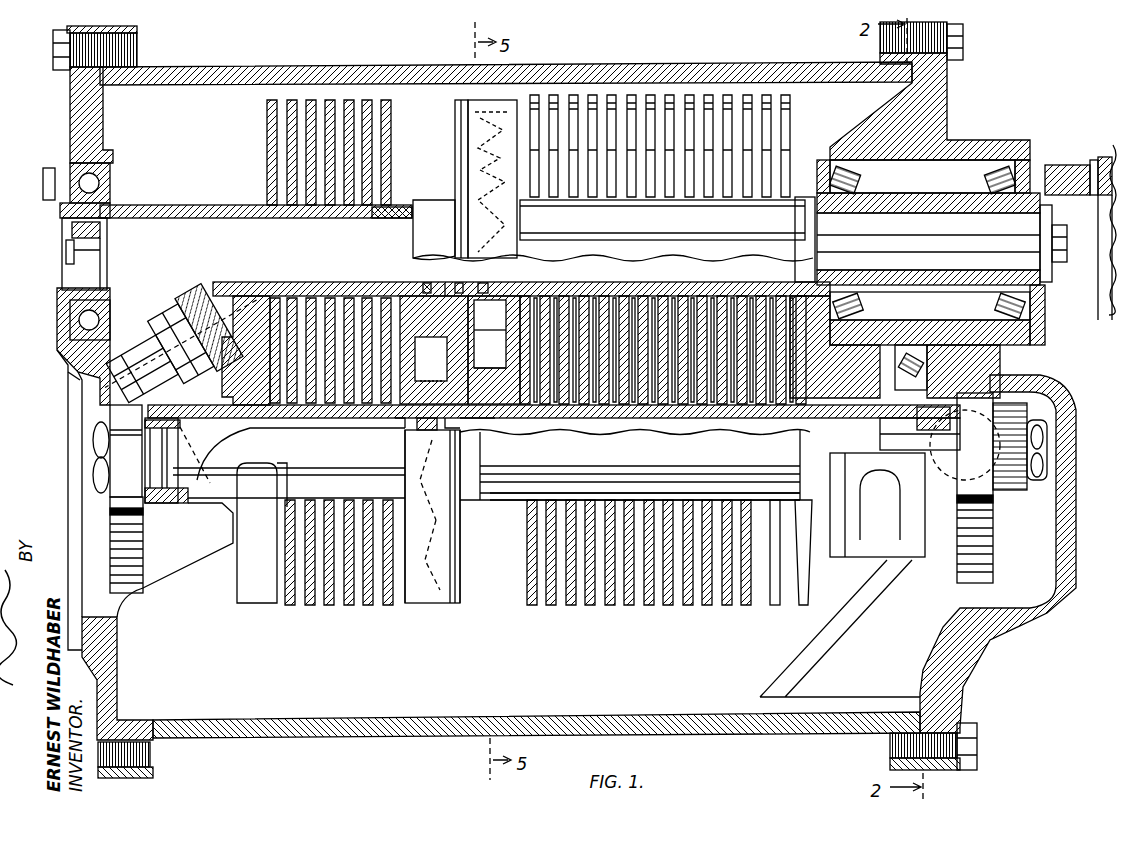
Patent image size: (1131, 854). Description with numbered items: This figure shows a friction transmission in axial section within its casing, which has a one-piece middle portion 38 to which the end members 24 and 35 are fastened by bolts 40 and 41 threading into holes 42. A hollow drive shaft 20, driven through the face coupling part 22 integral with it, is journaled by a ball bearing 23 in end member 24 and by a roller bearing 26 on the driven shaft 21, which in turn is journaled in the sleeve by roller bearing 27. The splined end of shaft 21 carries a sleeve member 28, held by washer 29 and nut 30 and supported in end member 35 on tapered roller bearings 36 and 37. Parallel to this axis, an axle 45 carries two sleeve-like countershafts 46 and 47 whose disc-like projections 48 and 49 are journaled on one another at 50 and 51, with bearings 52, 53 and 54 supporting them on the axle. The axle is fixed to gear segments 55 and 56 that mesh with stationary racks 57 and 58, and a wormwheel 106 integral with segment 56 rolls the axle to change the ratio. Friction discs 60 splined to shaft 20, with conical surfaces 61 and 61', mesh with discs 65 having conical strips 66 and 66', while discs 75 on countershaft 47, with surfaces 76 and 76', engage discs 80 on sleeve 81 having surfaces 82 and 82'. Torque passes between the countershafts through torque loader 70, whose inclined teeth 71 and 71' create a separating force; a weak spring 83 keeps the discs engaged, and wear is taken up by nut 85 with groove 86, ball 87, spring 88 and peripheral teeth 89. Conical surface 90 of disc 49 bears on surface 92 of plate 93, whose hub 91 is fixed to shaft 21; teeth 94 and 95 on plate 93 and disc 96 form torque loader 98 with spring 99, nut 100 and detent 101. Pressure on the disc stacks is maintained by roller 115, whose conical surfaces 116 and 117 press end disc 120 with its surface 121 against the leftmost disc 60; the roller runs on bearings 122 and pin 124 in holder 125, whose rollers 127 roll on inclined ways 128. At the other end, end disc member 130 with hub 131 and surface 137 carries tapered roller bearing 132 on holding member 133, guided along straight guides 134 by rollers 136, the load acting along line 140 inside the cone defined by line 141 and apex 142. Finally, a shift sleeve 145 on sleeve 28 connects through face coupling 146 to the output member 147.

The drive shaft 20 is at (162, 213).
The driven shaft 21 is at (806, 218).
The face coupling part 22 is at (44, 183).
The ball bearing 23 is at (110, 183).
The end member 24 is at (75, 120).
The roller bearing 26 is at (382, 219).
The roller bearing 27 is at (70, 240).
The sleeve member 28 is at (920, 212).
The washer 29 is at (1052, 224).
The nut 30 is at (1062, 254).
The end member 35 is at (945, 118).
The tapered roller bearing 36 is at (835, 182).
The tapered roller bearing 37 is at (998, 165).
The middle portion of casing 38 is at (700, 65).
The bolt 40 is at (55, 60).
The bolt 41 is at (963, 46).
The threaded hole 42 is at (140, 52).
The axle 45 is at (554, 429).
The countershaft 46 is at (312, 418).
The countershaft 47 is at (583, 404).
The disc-like projection 48 is at (431, 359).
The disc-like projection 49 is at (462, 560).
The bearing portion 50 is at (398, 426).
The bearing portion 51 is at (453, 426).
The anti-friction bearing 52 is at (422, 430).
The roller bearing 53 is at (168, 503).
The roller bearing 54 is at (935, 432).
The cylindrical gear segment 55 is at (108, 417).
The cylindrical gear segment 56 is at (1010, 392).
The stationary rack 57 is at (118, 536).
The stationary rack 58 is at (995, 563).
The friction disc 60 is at (385, 100).
The conical working surface 61 is at (303, 149).
The conical working surface 61' is at (301, 145).
The mating friction disc 65 is at (335, 606).
The conical working strip 66 is at (339, 329).
The conical working strip 66' is at (348, 318).
The torque loader 70 is at (433, 597).
The interengaging tooth 71 is at (440, 483).
The interengaging tooth 71' is at (421, 555).
The friction disc 75 is at (565, 606).
The conical side surface 76 is at (668, 568).
The conical side surface 76' is at (655, 568).
The mating friction disc 80 is at (604, 97).
The sleeve member 81 is at (640, 282).
The conical side surface 82 is at (663, 378).
The conical side surface 82' is at (663, 379).
The weak spring 83 is at (431, 368).
The adjusting nut 85 is at (426, 280).
The longitudinal groove 86 is at (461, 280).
The ball 87 is at (449, 276).
The spring 88 is at (490, 336).
The fine pitch teeth 89 is at (487, 280).
The conical working surface 90 is at (462, 590).
The hub 91 is at (430, 215).
The conical working surface 92 is at (477, 426).
The plate 93 is at (458, 142).
The axially projecting teeth 94 is at (493, 211).
The mating teeth 95 is at (487, 144).
The disc-like projection 96 is at (505, 110).
The torque loader 98 is at (488, 103).
The weak spring 99 is at (490, 334).
The adjusting nut 100 is at (513, 420).
The spring-pressed ball detent 101 is at (490, 357).
The wormwheel 106 is at (1010, 490).
The roller 115 is at (85, 376).
The conical surface 116 is at (252, 296).
The conical surface 117 is at (85, 394).
The end disc 120 is at (258, 605).
The conical working surface 121 is at (276, 298).
The anti-friction bearing 122 is at (222, 300).
The pin 124 is at (178, 300).
The holder 125 is at (140, 300).
The roller 127 is at (208, 290).
The way 128 is at (188, 430).
The end disc member 130 is at (805, 606).
The hub 131 is at (840, 392).
The tapered roller bearing 132 is at (895, 362).
The holding member 133 is at (962, 345).
The straight guide 134 is at (880, 578).
The cylindrical roller 136 is at (970, 392).
The conical surface 137 is at (775, 606).
The load line 140 is at (898, 434).
The line 141 is at (908, 322).
The apex 142 is at (965, 445).
The shift sleeve 145 is at (1060, 168).
The toothed face coupling 146 is at (1092, 160).
The output member 147 is at (1104, 160).